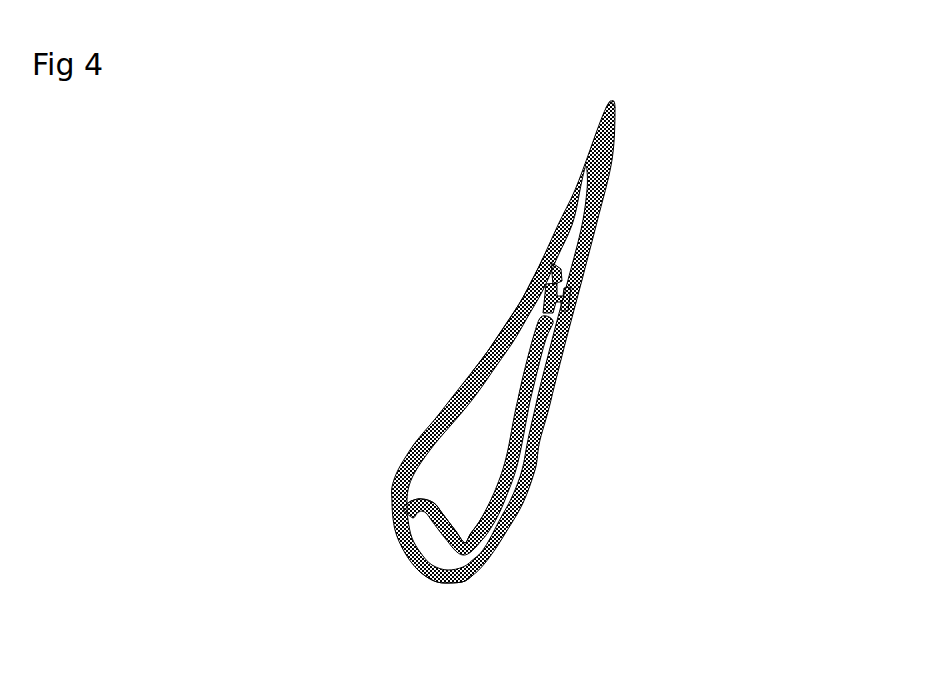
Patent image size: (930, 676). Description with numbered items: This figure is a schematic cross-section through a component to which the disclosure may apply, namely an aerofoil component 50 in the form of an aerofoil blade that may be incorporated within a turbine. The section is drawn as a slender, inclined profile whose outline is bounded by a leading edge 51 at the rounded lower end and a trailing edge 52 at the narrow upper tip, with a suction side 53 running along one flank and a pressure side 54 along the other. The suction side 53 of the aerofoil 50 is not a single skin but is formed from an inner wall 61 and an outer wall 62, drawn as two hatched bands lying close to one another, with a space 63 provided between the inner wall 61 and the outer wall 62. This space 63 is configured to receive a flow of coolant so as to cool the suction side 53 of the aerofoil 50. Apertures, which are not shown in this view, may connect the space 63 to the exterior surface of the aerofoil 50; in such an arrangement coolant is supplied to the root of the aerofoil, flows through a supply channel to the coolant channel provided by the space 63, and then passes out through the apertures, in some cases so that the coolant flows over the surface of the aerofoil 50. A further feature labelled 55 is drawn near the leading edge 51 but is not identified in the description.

The aerofoil component 50 is at (293, 343).
The leading edge 51 is at (430, 579).
The trailing edge 52 is at (608, 105).
The suction side 53 is at (575, 315).
The pressure side 54 is at (507, 328).
The leading edge 55 is at (462, 583).
The inner wall 61 is at (498, 497).
The outer wall 62 is at (526, 444).
The space 63 is at (542, 385).